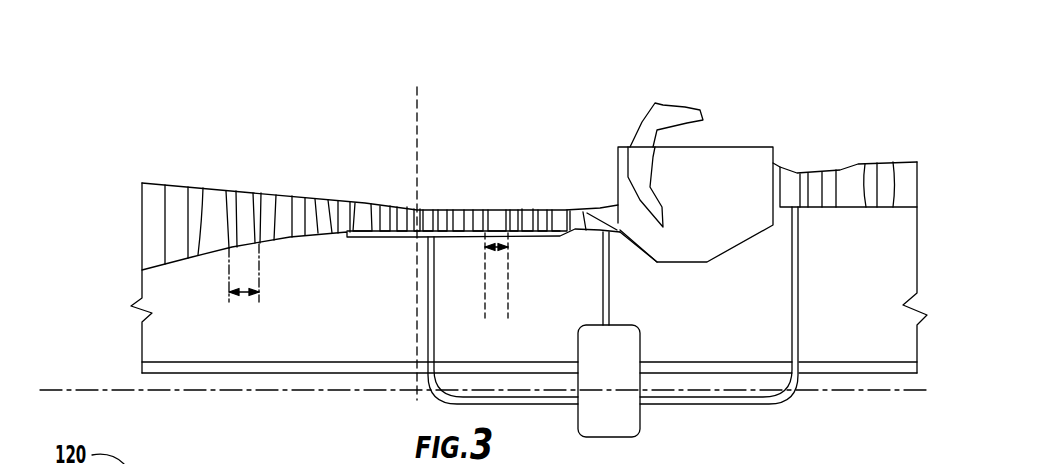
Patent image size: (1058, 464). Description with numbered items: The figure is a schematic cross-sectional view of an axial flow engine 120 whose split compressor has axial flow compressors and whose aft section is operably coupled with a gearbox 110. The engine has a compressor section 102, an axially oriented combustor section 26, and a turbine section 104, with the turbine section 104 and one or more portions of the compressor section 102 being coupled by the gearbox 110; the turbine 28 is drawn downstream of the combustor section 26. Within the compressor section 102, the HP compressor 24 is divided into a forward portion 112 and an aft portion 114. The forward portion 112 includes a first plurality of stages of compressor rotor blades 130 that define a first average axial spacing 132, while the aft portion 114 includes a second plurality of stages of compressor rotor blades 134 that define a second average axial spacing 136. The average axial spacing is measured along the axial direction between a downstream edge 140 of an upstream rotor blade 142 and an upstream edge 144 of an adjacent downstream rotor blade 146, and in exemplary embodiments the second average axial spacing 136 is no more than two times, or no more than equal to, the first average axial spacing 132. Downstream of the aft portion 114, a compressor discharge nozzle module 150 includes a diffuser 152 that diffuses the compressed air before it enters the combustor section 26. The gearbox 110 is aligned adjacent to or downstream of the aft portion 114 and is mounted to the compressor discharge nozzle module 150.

The axial flow engine 120 is at (135, 44).
The compressor section 102 is at (600, 77).
The turbine section 104 is at (810, 75).
The HP compressor 24 is at (335, 195).
The combustor section 26 is at (720, 204).
The turbine 28 is at (884, 187).
The forward portion 112 is at (403, 97).
The aft portion 114 is at (582, 98).
The compressor rotor blades 130 is at (218, 243).
The first average axial spacing 132 is at (258, 297).
The compressor rotor blades 134 is at (528, 236).
The second average axial spacing 136 is at (495, 250).
The downstream edge 140 is at (231, 200).
The upstream rotor blade 142 is at (210, 210).
The upstream edge 144 is at (258, 198).
The downstream rotor blade 146 is at (273, 204).
The compressor discharge nozzle module 150 is at (614, 204).
The diffuser 152 is at (620, 223).
The gearbox 110 is at (623, 391).